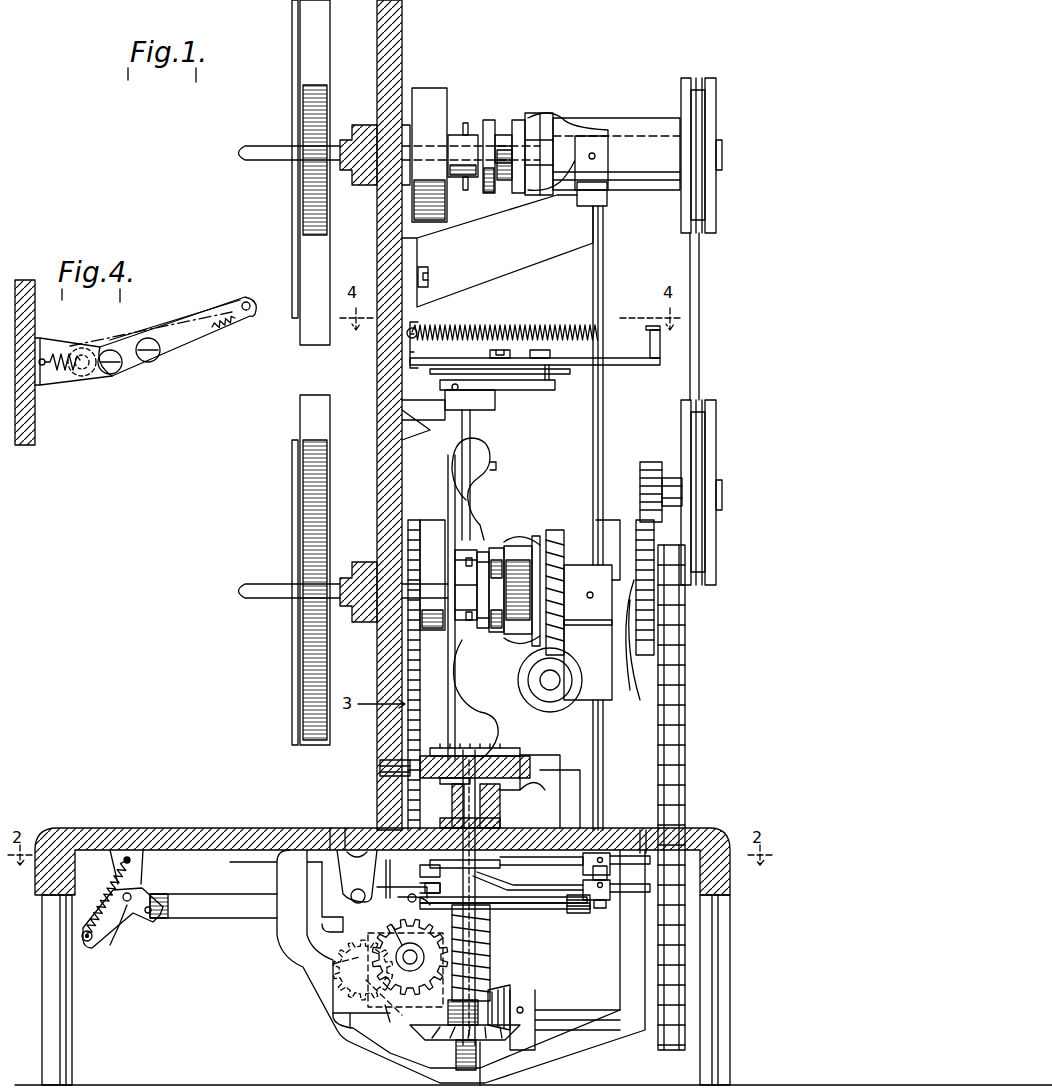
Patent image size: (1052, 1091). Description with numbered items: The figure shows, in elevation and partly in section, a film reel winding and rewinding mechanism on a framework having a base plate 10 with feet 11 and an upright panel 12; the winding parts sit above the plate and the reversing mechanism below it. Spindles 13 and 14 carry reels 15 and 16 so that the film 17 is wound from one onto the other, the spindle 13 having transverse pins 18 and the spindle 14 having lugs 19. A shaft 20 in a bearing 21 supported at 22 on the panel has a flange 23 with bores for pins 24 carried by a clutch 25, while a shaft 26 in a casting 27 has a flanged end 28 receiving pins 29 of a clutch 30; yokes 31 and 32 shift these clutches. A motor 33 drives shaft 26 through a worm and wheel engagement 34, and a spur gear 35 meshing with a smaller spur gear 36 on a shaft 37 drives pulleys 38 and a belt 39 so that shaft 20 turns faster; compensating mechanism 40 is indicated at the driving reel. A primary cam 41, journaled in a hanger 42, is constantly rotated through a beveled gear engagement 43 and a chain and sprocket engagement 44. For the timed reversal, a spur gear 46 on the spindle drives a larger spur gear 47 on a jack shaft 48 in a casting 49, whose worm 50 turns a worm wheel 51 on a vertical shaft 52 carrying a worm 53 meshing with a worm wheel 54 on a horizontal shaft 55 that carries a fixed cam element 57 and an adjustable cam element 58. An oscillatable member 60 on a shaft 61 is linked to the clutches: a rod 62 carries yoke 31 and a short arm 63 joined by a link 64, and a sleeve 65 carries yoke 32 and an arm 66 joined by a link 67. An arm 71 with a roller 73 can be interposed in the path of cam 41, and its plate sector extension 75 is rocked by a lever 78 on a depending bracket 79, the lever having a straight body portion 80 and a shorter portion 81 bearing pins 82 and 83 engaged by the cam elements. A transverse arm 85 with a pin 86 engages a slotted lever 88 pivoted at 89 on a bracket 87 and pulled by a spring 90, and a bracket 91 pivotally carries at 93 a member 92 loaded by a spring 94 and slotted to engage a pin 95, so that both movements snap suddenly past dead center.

In FIG. 1, the base plate 10 is at (135, 828).
In FIG. 1, the pedestals or feet 11 is at (62, 1040).
In FIG. 1, the superstructure or panel 12 is at (402, 32).
In FIG. 4, the superstructure or panel 12 is at (24, 280).
In FIG. 1, the film reel spindle 13 is at (262, 148).
In FIG. 1, the film reel spindle 14 is at (258, 586).
In FIG. 1, the reel 15 is at (293, 6).
In FIG. 1, the reel 16 is at (292, 447).
In FIG. 1, the film 17 is at (300, 325).
In FIG. 1, the transverse pins 18 is at (465, 198).
In FIG. 1, the lugs 19 is at (472, 556).
In FIG. 1, the shaft 20 is at (502, 135).
In FIG. 1, the bearing 21 is at (641, 125).
In FIG. 1, the bearing support 22 is at (428, 272).
In FIG. 1, the flange 23 is at (489, 120).
In FIG. 1, the pins 24 is at (504, 180).
In FIG. 1, the clutch 25 is at (521, 120).
In FIG. 1, the shaft 26 is at (533, 580).
In FIG. 1, the casting 27 is at (580, 555).
In FIG. 1, the flanged end 28 is at (478, 587).
In FIG. 1, the pins 29 is at (483, 552).
In FIG. 1, the clutch 30 is at (499, 548).
In FIG. 1, the yoke 31 is at (566, 115).
In FIG. 1, the yoke 32 is at (522, 646).
In FIG. 1, the motor 33 is at (547, 688).
In FIG. 1, the worm and wheel engagement 34 is at (552, 530).
In FIG. 1, the spur gear 35 is at (656, 545).
In FIG. 1, the spur gear 36 is at (647, 462).
In FIG. 1, the shaft 37 is at (666, 478).
In FIG. 1, the pulleys 38 is at (716, 205).
In FIG. 1, the belt 39 is at (699, 296).
In FIG. 1, the compensating mechanism 40 is at (492, 450).
In FIG. 1, the cam 41 is at (540, 910).
In FIG. 1, the hanger 42 is at (582, 1047).
In FIG. 1, the beveled gear engagement 43 is at (512, 988).
In FIG. 1, the chain and sprocket engagement 44 is at (685, 762).
In FIG. 1, the spur gear 46 is at (412, 520).
In FIG. 1, the spur gear 47 is at (426, 700).
In FIG. 1, the jack shaft 48 is at (380, 765).
In FIG. 1, the casting 49 is at (530, 795).
In FIG. 1, the worm 50 is at (458, 748).
In FIG. 1, the worm wheel 51 is at (440, 780).
In FIG. 1, the vertical shaft 52 is at (452, 808).
In FIG. 1, the worm 53 is at (492, 940).
In FIG. 1, the worm wheel 54 is at (372, 970).
In FIG. 1, the horizontal shaft 55 is at (410, 950).
In FIG. 1, the fixed cam element 57 is at (366, 988).
In FIG. 1, the adjustable cam element 58 is at (391, 977).
In FIG. 1, the oscillatable member 60 is at (493, 858).
In FIG. 1, the shaft 61 is at (470, 432).
In FIG. 4, the shaft 61 is at (81, 376).
In FIG. 1, the rod 62 is at (603, 278).
In FIG. 1, the short arm 63 is at (598, 908).
In FIG. 1, the link 64 is at (486, 912).
In FIG. 1, the sleeve 65 is at (603, 745).
In FIG. 1, the short arm 66 is at (643, 840).
In FIG. 1, the link 67 is at (535, 871).
In FIG. 1, the arm 71 is at (572, 910).
In FIG. 1, the projections or rollers 73 is at (588, 914).
In FIG. 1, the rear extension 75 is at (419, 886).
In FIG. 1, the lever 78 is at (390, 884).
In FIG. 1, the depending bracket 79 is at (357, 876).
In FIG. 1, the straight body portion 80 is at (238, 912).
In FIG. 1, the shorter portion 81 is at (332, 897).
In FIG. 1, the projecting pin 82 is at (407, 899).
In FIG. 1, the projecting pin 83 is at (342, 964).
In FIG. 1, the transverse arm 85 is at (508, 390).
In FIG. 4, the transverse arm 85 is at (112, 340).
In FIG. 1, the pin 86 is at (558, 373).
In FIG. 4, the pin 86 is at (148, 362).
In FIG. 1, the bracket 87 is at (425, 370).
In FIG. 4, the bracket 87 is at (46, 338).
In FIG. 1, the lever 88 is at (627, 368).
In FIG. 4, the lever 88 is at (186, 344).
In FIG. 1, the pivot point 89 is at (490, 355).
In FIG. 4, the pivot point 89 is at (112, 374).
In FIG. 1, the spring 90 is at (528, 326).
In FIG. 4, the spring 90 is at (72, 353).
In FIG. 1, the bracket 91 is at (141, 873).
In FIG. 1, the member 92 is at (128, 924).
In FIG. 1, the pivot point 93 is at (100, 944).
In FIG. 1, the spring 94 is at (105, 898).
In FIG. 1, the pin 95 is at (156, 916).